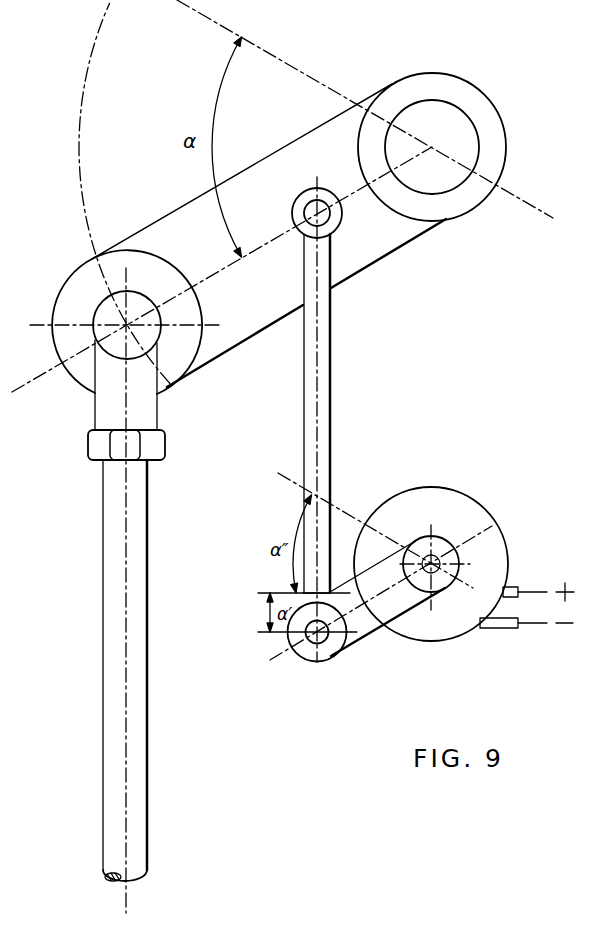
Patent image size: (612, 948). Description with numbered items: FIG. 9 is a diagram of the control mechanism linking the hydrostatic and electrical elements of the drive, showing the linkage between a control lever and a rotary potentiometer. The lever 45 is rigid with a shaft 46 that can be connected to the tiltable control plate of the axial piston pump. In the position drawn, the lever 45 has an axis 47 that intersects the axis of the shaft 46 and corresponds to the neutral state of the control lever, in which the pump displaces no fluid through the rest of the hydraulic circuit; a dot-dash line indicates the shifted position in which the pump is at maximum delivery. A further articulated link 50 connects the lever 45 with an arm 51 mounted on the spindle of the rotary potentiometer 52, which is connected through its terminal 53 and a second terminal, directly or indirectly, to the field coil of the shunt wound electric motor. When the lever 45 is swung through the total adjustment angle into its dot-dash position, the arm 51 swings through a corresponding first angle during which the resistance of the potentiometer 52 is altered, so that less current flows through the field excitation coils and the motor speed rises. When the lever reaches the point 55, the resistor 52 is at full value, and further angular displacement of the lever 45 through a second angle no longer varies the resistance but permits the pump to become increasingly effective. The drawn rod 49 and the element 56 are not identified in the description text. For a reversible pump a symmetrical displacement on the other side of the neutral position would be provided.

The lever 45 is at (217, 347).
The shaft 46 is at (449, 137).
The axis 47 is at (30, 379).
The rod 49 is at (109, 762).
The articulated link 50 is at (333, 420).
The arm 51 is at (363, 623).
The rotary potentiometer 52 is at (482, 515).
The terminal 53 is at (513, 587).
The point 55 is at (295, 591).
The crank arm 56 is at (344, 512).